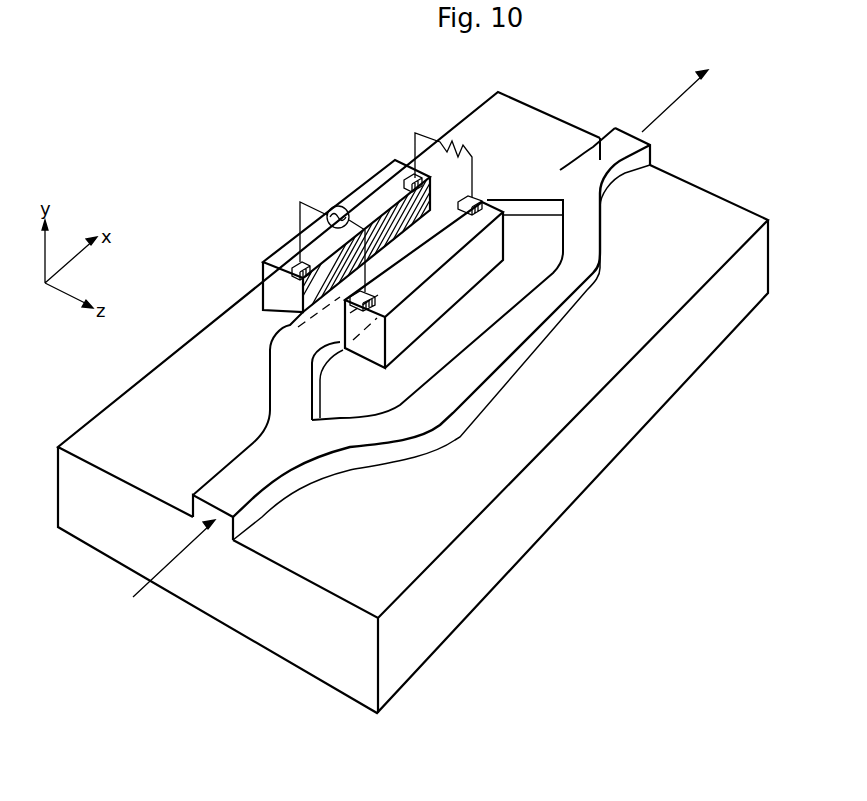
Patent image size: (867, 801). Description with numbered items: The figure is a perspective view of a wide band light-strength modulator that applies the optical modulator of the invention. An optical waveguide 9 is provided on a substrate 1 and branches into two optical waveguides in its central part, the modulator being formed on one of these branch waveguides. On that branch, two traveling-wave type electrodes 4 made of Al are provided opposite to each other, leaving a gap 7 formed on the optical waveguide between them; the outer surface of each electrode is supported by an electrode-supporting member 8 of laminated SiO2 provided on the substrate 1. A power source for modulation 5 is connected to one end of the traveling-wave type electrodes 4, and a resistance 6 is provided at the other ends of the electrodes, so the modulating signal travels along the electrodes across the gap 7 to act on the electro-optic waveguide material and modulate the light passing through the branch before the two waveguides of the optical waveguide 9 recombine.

The substrate 1 is at (532, 520).
The traveling-wave type electrodes 4 is at (327, 312).
The power source for modulation 5 is at (348, 207).
The resistance 6 is at (443, 142).
The gap 7 is at (403, 238).
The electrode-supporting members 8 is at (468, 312).
The optical waveguide 9 is at (310, 443).